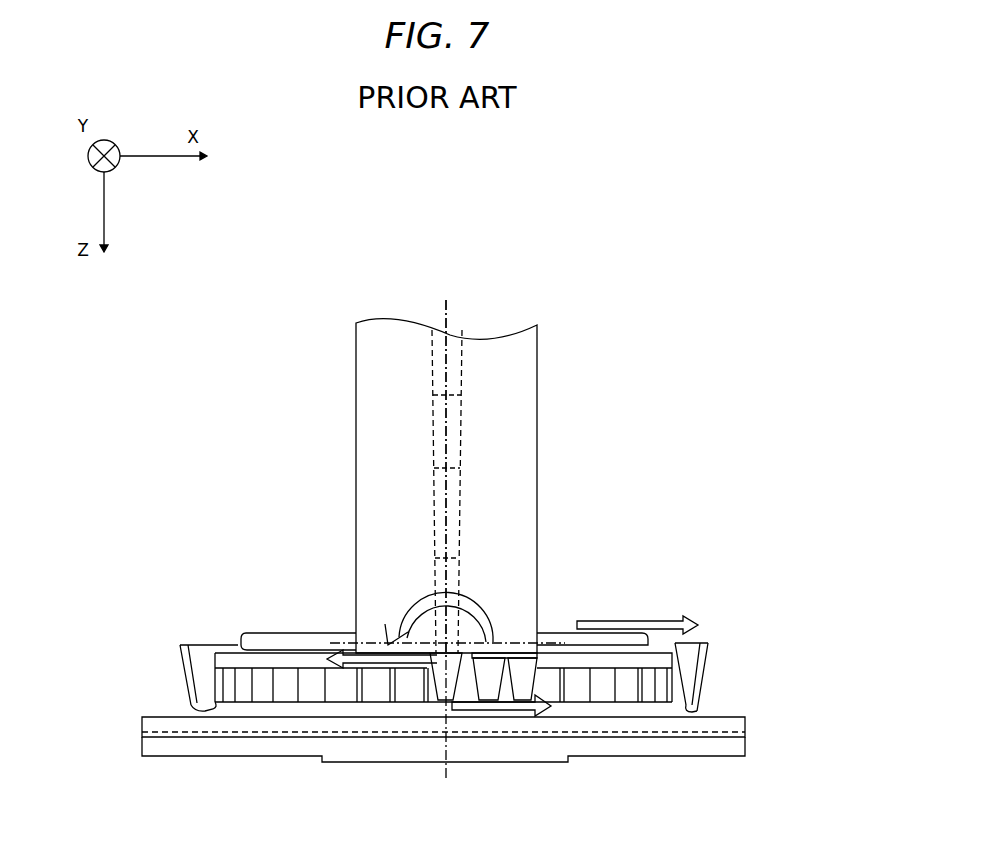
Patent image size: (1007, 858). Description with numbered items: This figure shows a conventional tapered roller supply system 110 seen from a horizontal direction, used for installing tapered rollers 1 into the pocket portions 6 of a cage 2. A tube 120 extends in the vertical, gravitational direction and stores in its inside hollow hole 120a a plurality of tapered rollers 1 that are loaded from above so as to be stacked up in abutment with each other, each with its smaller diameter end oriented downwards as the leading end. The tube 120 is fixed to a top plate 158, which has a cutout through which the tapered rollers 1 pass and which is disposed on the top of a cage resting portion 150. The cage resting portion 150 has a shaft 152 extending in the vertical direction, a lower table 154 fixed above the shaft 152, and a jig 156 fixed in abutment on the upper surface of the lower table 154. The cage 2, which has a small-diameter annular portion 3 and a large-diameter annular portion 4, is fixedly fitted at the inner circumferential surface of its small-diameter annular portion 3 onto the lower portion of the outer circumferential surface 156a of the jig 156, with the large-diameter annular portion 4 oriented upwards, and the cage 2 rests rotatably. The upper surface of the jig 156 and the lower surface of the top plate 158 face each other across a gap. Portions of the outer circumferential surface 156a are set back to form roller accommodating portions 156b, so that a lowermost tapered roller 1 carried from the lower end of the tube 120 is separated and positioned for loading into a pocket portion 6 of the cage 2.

The tapered roller supply system 110 is at (630, 299).
The tube 120 is at (370, 350).
The hollow hole 120a is at (436, 330).
The tapered roller 1 is at (455, 340).
The cage resting portion 150 is at (128, 716).
The shaft 152 is at (725, 747).
The lower table 154 is at (745, 725).
The jig 156 is at (677, 671).
The outer circumferential surface 156a is at (690, 705).
The roller accommodating portion 156b is at (408, 690).
The top plate 158 is at (698, 634).
The cage 2 is at (712, 641).
The small-diameter annular portion 3 is at (190, 705).
The large-diameter annular portion 4 is at (177, 645).
The pocket portion 6 is at (702, 680).